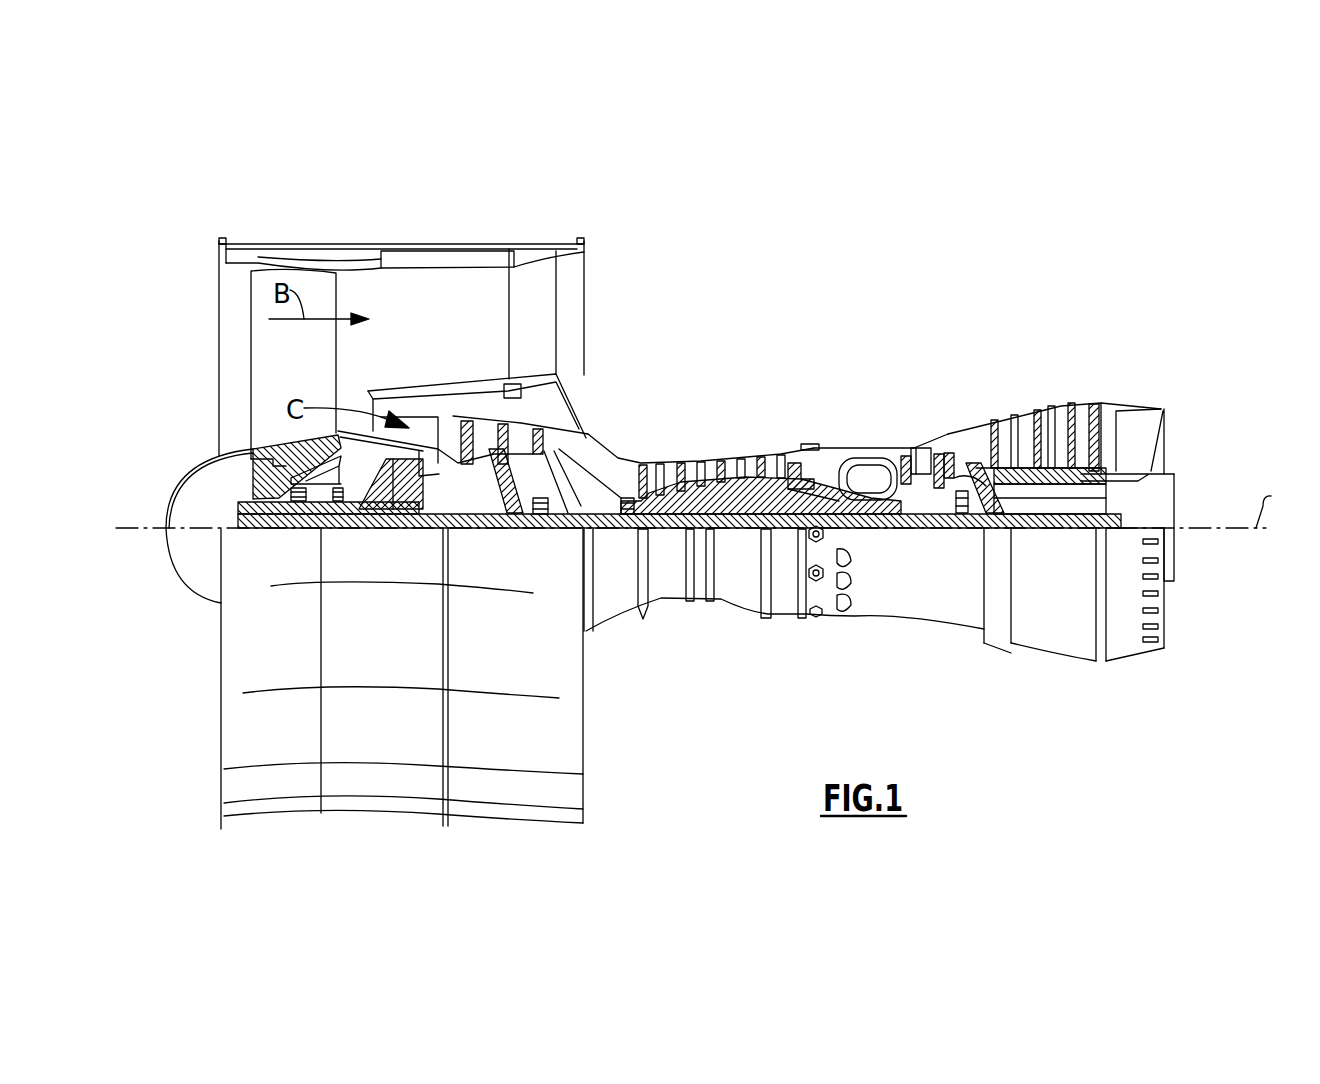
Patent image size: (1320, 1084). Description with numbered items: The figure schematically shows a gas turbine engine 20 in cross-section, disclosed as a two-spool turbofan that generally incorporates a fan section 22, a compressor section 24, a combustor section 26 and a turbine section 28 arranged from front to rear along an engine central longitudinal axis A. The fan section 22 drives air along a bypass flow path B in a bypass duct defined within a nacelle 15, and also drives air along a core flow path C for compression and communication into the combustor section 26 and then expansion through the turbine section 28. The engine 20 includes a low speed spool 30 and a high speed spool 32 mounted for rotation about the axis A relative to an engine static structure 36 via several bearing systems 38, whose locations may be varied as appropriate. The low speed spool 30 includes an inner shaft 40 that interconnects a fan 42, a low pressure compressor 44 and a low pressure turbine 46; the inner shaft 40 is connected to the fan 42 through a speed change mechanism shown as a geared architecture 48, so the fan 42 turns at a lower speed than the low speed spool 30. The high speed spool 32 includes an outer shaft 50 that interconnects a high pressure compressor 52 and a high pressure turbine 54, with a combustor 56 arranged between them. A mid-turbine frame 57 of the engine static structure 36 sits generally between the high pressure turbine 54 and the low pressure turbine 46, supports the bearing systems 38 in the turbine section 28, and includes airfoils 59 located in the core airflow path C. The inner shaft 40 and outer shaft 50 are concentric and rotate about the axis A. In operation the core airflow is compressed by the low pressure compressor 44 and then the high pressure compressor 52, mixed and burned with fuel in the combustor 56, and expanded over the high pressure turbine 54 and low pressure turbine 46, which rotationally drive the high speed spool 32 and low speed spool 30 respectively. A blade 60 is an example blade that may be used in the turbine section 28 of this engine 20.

The nacelle 15 is at (402, 248).
The gas turbine engine 20 is at (868, 302).
The fan section 22 is at (328, 228).
The compressor section 24 is at (630, 420).
The combustor section 26 is at (852, 405).
The turbine section 28 is at (1003, 375).
The low speed spool 30 is at (742, 545).
The high speed spool 32 is at (783, 460).
The engine static structure 36 is at (780, 630).
The bearing systems 38 is at (542, 513).
The inner shaft 40 is at (600, 530).
The fan 42 is at (304, 373).
The low pressure compressor 44 is at (545, 398).
The low pressure turbine 46 is at (1053, 403).
The geared architecture 48 is at (407, 507).
The outer shaft 50 is at (853, 522).
The high pressure compressor 52 is at (713, 503).
The high pressure turbine 54 is at (917, 447).
The combustor 56 is at (857, 467).
The mid-turbine frame 57 is at (970, 425).
The airfoils 59 is at (1000, 498).
The blade 60 is at (1027, 410).